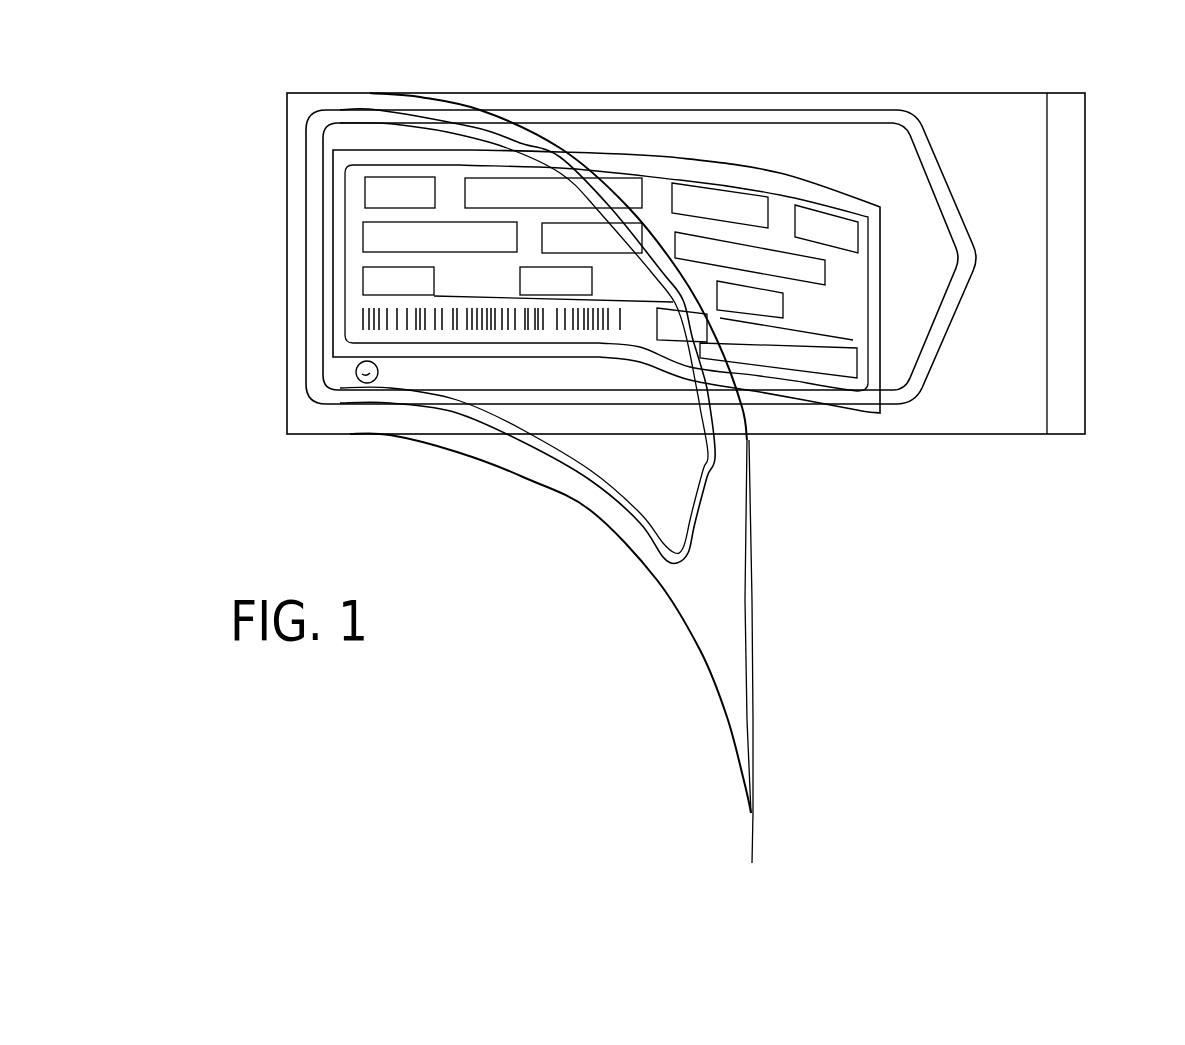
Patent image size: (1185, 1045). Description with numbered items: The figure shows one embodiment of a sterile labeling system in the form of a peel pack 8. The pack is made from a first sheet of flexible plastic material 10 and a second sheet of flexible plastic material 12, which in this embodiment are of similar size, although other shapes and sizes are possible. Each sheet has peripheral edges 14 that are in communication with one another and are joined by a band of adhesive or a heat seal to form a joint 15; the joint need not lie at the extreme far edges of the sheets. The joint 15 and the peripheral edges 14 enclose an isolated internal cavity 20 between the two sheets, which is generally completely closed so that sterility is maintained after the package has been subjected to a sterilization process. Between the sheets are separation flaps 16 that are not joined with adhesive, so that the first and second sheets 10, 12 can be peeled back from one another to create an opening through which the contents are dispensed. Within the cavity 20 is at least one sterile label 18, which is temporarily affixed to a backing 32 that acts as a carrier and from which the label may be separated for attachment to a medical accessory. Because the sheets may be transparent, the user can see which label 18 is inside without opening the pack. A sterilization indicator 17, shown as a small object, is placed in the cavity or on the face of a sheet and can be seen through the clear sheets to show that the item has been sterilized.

The peel pack 8 is at (295, 180).
The first sheet of flexible plastic material 10 is at (1013, 120).
The second sheet of flexible plastic material 12 is at (712, 640).
The peripheral edges 14 is at (543, 103).
The joint 15 is at (623, 118).
The separation flaps 16 is at (1072, 235).
The sterilization indicator 17 is at (353, 383).
The sterile label 18 is at (712, 175).
The internal cavity 20 is at (735, 378).
The backing 32 is at (808, 180).